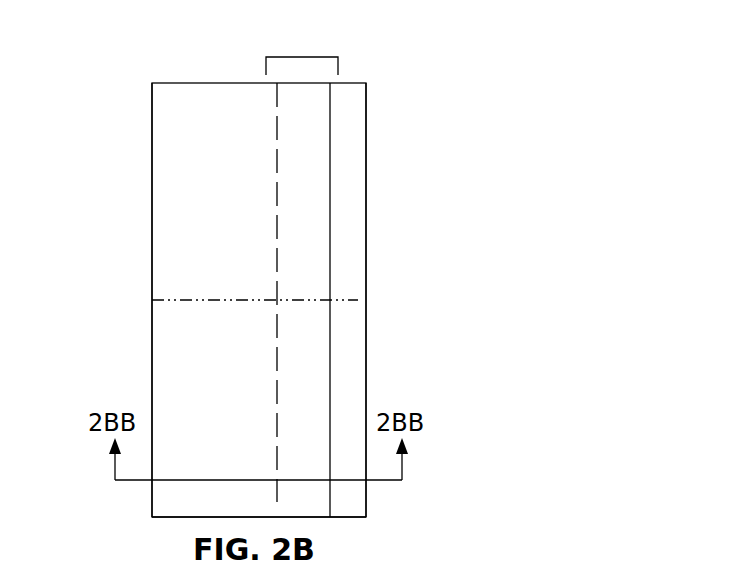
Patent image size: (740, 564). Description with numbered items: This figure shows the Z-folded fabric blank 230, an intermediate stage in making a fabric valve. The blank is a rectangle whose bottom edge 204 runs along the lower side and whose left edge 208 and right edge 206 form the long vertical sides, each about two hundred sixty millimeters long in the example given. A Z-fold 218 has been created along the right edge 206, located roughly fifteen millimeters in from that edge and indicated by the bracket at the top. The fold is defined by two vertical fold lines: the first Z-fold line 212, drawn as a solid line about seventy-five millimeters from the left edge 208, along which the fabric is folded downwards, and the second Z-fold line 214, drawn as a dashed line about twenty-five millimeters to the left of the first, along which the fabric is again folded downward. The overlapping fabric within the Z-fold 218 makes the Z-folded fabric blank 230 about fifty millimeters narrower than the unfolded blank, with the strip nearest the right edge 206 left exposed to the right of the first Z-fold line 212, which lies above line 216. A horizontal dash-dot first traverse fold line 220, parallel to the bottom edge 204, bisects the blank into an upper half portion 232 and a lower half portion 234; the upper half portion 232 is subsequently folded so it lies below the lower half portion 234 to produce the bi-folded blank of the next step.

The bottom edge 204 is at (177, 517).
The right edge 206 is at (366, 228).
The left edge 208 is at (152, 390).
The first Z-fold line 212 is at (330, 220).
The second Z-fold line 214 is at (277, 137).
The line 216 is at (330, 390).
The Z-fold 218 is at (302, 51).
The first traverse fold line 220 is at (240, 300).
The Z-folded fabric blank 230 is at (88, 214).
The upper half portion 232 is at (180, 206).
The lower half portion 234 is at (185, 436).